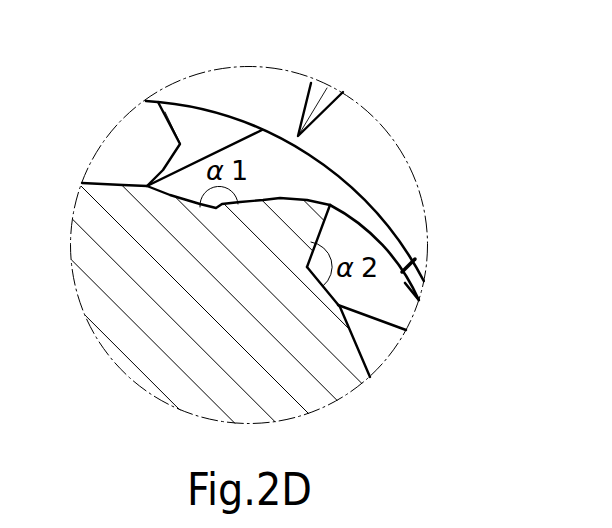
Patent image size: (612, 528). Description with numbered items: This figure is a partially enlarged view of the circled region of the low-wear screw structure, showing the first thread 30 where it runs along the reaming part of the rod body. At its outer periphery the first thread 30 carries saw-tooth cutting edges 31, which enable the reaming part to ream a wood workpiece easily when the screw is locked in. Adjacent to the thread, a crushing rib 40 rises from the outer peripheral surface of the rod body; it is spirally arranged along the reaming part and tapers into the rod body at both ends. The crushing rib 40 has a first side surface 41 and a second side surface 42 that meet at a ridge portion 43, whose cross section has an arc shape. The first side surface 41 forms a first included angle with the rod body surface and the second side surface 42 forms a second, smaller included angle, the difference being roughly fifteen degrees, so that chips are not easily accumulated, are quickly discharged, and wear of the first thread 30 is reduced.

The first thread 30 is at (201, 115).
The saw-tooth cutting edges 31 is at (277, 197).
The crushing rib 40 is at (418, 299).
The first side surface 41 is at (311, 83).
The second side surface 42 is at (325, 235).
The ridge portion 43 is at (329, 205).